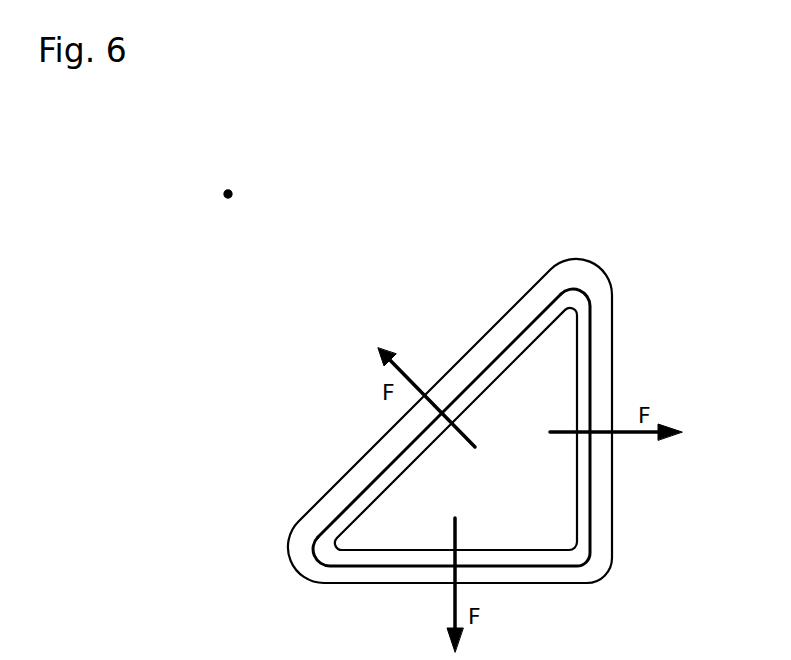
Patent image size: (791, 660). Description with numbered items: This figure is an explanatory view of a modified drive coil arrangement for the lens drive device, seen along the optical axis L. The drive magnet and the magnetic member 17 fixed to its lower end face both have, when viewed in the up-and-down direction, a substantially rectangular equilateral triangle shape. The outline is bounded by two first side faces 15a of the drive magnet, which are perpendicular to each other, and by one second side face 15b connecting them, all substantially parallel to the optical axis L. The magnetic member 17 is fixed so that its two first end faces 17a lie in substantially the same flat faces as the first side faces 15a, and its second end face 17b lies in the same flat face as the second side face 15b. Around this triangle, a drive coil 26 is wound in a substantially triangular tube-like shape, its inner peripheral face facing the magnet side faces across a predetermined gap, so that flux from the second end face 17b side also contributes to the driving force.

The magnetic member 17 is at (552, 409).
The first side face 15a is at (529, 469).
The first end face 17a is at (578, 513).
The second side face 15b is at (399, 415).
The second end face 17b is at (358, 513).
The drive coil 26 is at (602, 572).
The optical axis L is at (228, 194).